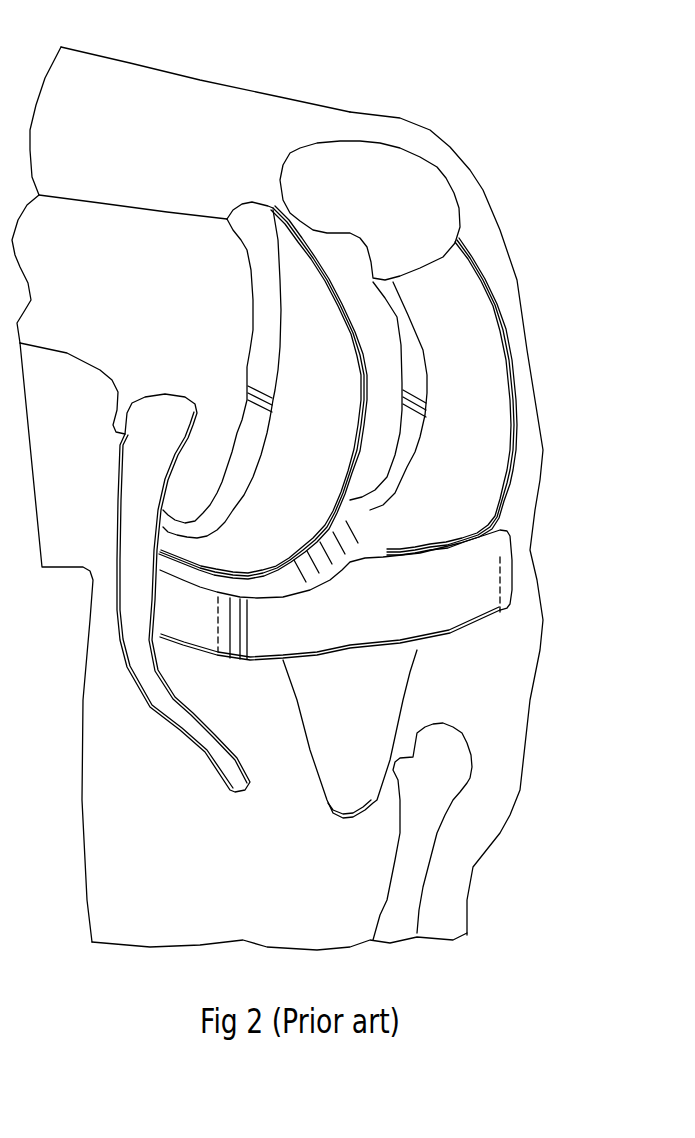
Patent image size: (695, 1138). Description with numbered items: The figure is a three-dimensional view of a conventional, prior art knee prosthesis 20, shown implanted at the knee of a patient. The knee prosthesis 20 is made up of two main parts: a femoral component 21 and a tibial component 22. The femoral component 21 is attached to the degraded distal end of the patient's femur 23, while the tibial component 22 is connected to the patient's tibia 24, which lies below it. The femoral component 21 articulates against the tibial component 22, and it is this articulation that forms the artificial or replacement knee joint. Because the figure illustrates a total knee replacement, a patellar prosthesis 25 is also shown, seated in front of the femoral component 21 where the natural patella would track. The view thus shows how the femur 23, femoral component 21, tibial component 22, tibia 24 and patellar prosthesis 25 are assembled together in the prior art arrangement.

The knee prosthesis 20 is at (540, 231).
The femoral component 21 is at (378, 390).
The tibial component 22 is at (377, 590).
The femur 23 is at (181, 221).
The tibia 24 is at (482, 831).
The patellar prosthesis 25 is at (407, 197).